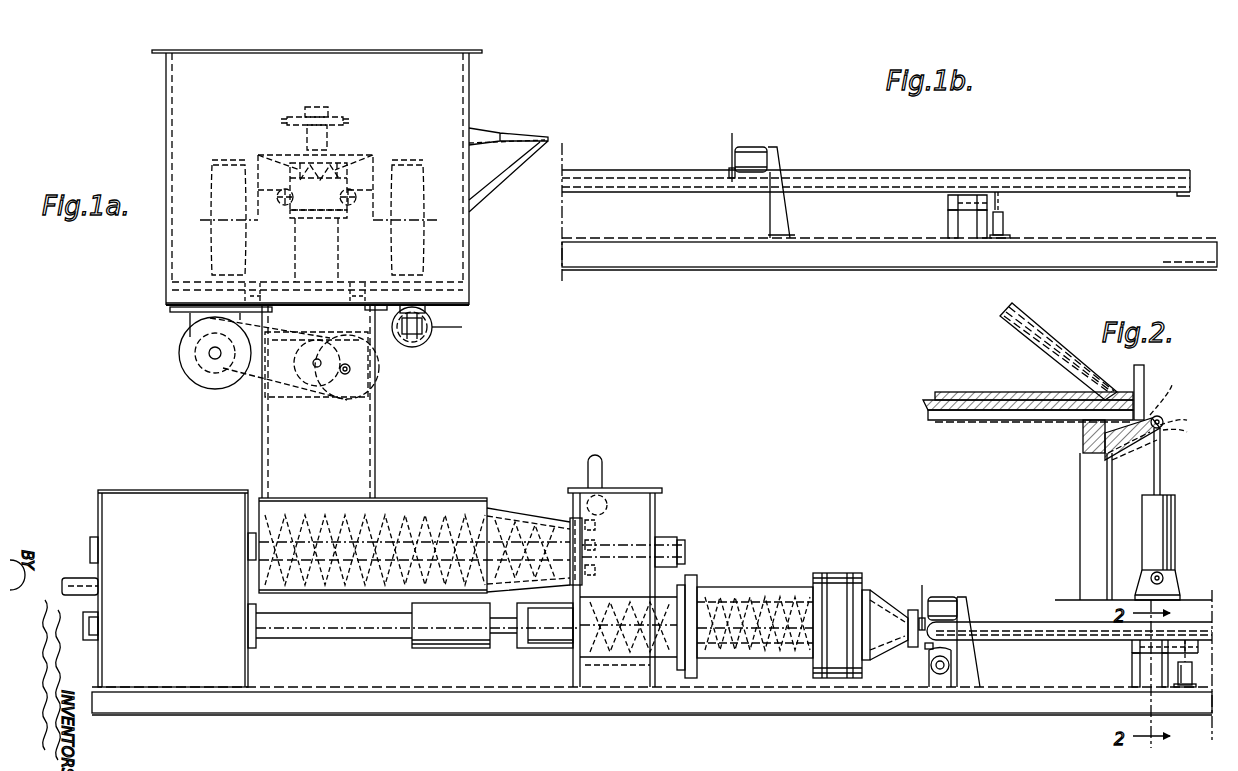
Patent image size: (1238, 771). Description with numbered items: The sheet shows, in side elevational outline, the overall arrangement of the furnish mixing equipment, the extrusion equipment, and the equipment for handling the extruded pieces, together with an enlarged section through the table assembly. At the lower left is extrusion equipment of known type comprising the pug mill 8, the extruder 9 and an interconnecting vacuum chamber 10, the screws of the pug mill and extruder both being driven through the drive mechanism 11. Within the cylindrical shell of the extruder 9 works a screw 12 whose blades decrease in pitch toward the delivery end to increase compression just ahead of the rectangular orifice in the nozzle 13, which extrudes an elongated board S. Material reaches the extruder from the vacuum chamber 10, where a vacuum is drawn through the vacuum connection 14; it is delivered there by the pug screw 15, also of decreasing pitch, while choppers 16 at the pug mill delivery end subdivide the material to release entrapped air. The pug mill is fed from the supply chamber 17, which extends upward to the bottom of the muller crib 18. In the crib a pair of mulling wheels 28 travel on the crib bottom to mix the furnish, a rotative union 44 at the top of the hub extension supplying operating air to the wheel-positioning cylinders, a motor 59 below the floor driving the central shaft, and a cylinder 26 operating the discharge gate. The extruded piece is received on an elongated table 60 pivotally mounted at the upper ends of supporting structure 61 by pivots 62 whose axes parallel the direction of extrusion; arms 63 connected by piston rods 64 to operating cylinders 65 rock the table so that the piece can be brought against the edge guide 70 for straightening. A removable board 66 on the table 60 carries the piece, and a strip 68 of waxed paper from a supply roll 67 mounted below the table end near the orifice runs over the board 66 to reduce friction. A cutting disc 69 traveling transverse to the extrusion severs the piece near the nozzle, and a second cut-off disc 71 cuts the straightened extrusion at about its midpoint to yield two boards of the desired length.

In FIG. 1a, the pug mill 8 is at (418, 497).
In FIG. 1a, the extruder 9 is at (740, 582).
In FIG. 1a, the vacuum chamber 10 is at (662, 514).
In FIG. 1a, the drive mechanism 11 is at (180, 482).
In FIG. 1a, the screw 12 is at (700, 590).
In FIG. 1a, the nozzle 13 is at (890, 608).
In FIG. 1a, the vacuum connection 14 is at (602, 470).
In FIG. 1a, the pug screw 15 is at (470, 497).
In FIG. 1a, the choppers 16 is at (570, 516).
In FIG. 1a, the supply chamber 17 is at (368, 456).
In FIG. 1a, the muller crib 18 is at (155, 288).
In FIG. 1a, the cylinder 26 is at (418, 343).
In FIG. 1a, the mulling wheels 28 is at (220, 160).
In FIG. 1a, the rotative union 44 is at (330, 100).
In FIG. 1a, the motor 59 is at (215, 390).
In FIG. 1a, the table 60 is at (1022, 645).
In FIG. 2, the table 60 is at (996, 424).
In FIG. 1a, the supporting structure 61 is at (1132, 676).
In FIG. 1b, the supporting structure 61 is at (950, 231).
In FIG. 2, the supporting structure 61 is at (1082, 520).
In FIG. 1a, the pivots 62 is at (1133, 653).
In FIG. 1b, the pivots 62 is at (948, 199).
In FIG. 2, the pivots 62 is at (1083, 444).
In FIG. 2, the arms 63 is at (1108, 468).
In FIG. 2, the piston rods 64 is at (1162, 468).
In FIG. 1a, the operating cylinders 65 is at (1192, 688).
In FIG. 1b, the operating cylinders 65 is at (1004, 228).
In FIG. 2, the operating cylinders 65 is at (1173, 535).
In FIG. 2, the board 66 is at (927, 412).
In FIG. 1a, the supply roll 67 is at (930, 672).
In FIG. 1a, the strip 68 is at (926, 650).
In FIG. 2, the strip 68 is at (930, 398).
In FIG. 1a, the cutting disc 69 is at (926, 592).
In FIG. 2, the edge guide 70 is at (1145, 390).
In FIG. 1b, the second cut-off disc 71 is at (736, 144).
In FIG. 2, the board S is at (962, 390).